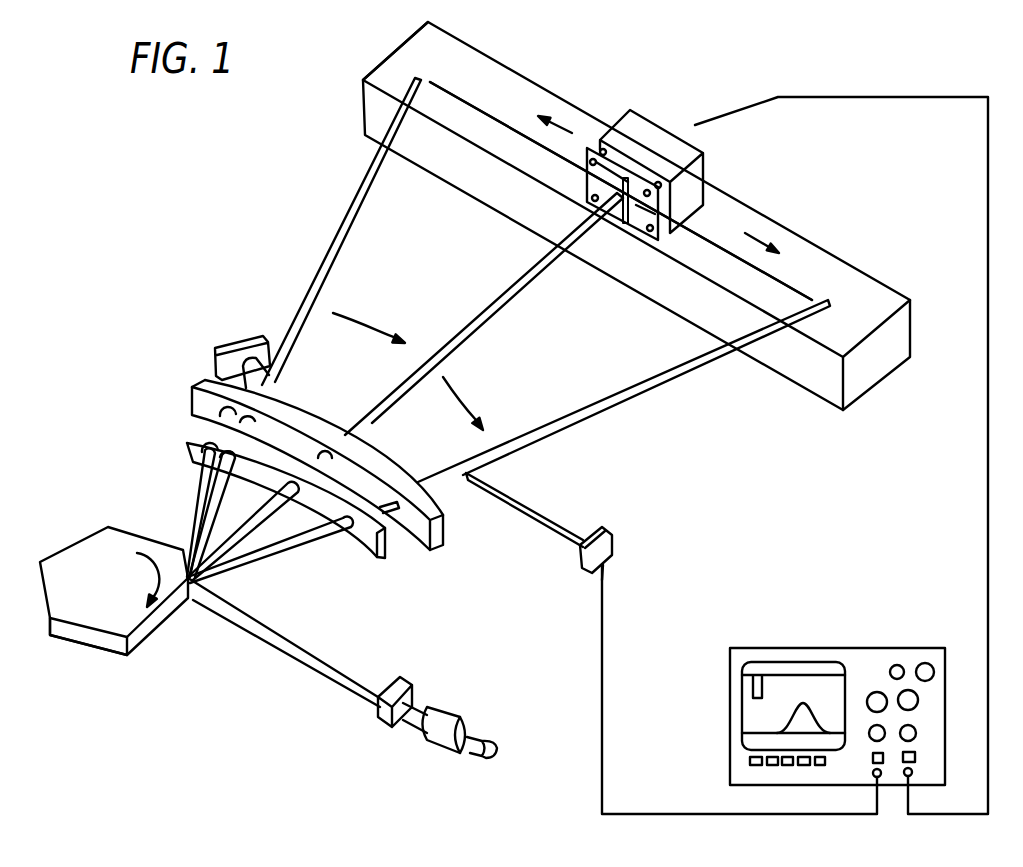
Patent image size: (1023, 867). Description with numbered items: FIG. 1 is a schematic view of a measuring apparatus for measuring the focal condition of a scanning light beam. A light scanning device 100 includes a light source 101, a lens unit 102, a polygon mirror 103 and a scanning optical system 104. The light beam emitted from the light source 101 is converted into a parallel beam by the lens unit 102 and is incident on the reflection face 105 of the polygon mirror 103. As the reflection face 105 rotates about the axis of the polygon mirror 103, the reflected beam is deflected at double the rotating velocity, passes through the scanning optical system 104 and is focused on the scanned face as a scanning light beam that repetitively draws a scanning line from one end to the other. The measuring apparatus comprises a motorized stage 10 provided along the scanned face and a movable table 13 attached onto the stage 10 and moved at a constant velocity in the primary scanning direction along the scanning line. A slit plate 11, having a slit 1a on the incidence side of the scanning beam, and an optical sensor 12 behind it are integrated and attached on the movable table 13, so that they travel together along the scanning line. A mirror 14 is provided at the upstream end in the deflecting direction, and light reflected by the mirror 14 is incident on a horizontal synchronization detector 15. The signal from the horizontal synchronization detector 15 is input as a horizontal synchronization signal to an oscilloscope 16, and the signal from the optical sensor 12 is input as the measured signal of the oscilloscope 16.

The slit 1a is at (625, 227).
The motorized stage 10 is at (814, 243).
The slit plate 11 is at (597, 153).
The optical sensor 12 is at (652, 142).
The movable table 13 is at (734, 143).
The mirror 14 is at (235, 342).
The horizontal synchronization detector 15 is at (608, 530).
The oscilloscope 16 is at (788, 648).
The light scanning device 100 is at (344, 697).
The light source 101 is at (473, 753).
The lens unit 102 is at (438, 768).
The polygon mirror 103 is at (130, 628).
The scanning optical system 104 is at (450, 560).
The reflection face 105 is at (80, 637).